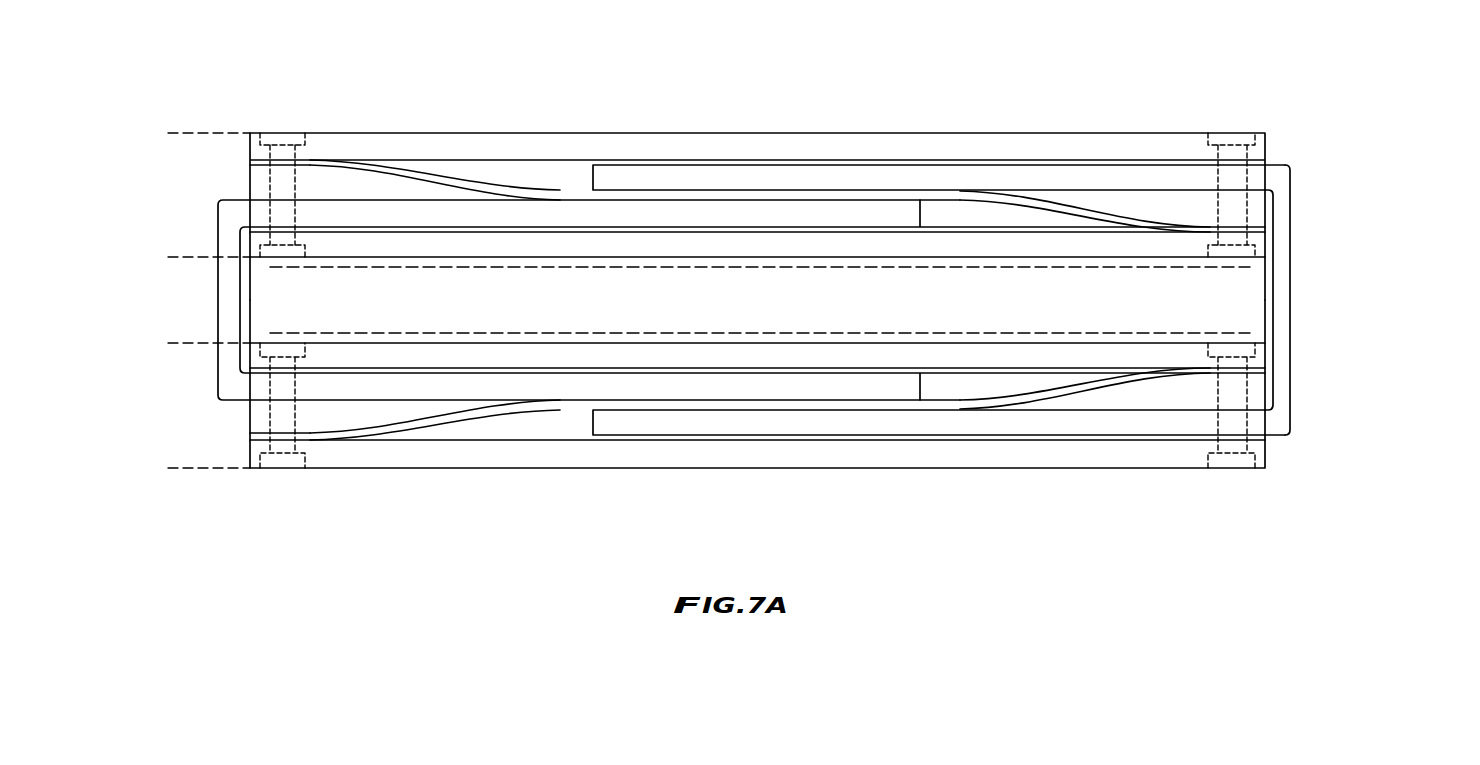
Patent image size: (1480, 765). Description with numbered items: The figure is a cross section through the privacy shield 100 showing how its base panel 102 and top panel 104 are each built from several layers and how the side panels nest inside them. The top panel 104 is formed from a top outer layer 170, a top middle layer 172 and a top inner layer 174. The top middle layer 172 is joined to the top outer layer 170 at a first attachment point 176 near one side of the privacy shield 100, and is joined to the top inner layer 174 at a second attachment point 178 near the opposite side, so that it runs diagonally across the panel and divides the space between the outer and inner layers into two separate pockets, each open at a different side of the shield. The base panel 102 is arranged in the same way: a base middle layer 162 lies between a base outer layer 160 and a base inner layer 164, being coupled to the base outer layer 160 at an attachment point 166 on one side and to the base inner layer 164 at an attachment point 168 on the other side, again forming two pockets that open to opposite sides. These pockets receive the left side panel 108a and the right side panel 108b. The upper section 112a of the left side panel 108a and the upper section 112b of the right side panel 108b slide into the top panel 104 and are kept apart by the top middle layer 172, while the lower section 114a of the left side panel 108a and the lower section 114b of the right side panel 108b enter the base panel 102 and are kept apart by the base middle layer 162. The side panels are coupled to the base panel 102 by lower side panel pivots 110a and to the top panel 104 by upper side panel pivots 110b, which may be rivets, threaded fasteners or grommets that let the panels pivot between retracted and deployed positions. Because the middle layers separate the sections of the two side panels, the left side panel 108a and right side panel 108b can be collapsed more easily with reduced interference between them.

The privacy shield 100 is at (245, 72).
The base panel 102 is at (168, 343).
The top panel 104 is at (168, 257).
The left side panel 108a is at (218, 400).
The right side panel 108b is at (1358, 163).
The lower side panel pivots 110a is at (270, 470).
The upper side panel pivots 110b is at (288, 132).
The upper section of left side panel 112a is at (796, 215).
The upper section of right side panel 112b is at (922, 175).
The lower section of left side panel 114a is at (796, 386).
The lower section of right side panel 114b is at (952, 429).
The base outer layer 160 is at (470, 462).
The base middle layer 162 is at (343, 438).
The base inner layer 164 is at (313, 385).
The attachment point 166 is at (313, 443).
The attachment point 168 is at (1258, 371).
The top outer layer 170 is at (471, 138).
The top middle layer 172 is at (511, 186).
The top inner layer 174 is at (618, 247).
The attachment point 176 is at (311, 160).
The attachment point 178 is at (1210, 230).